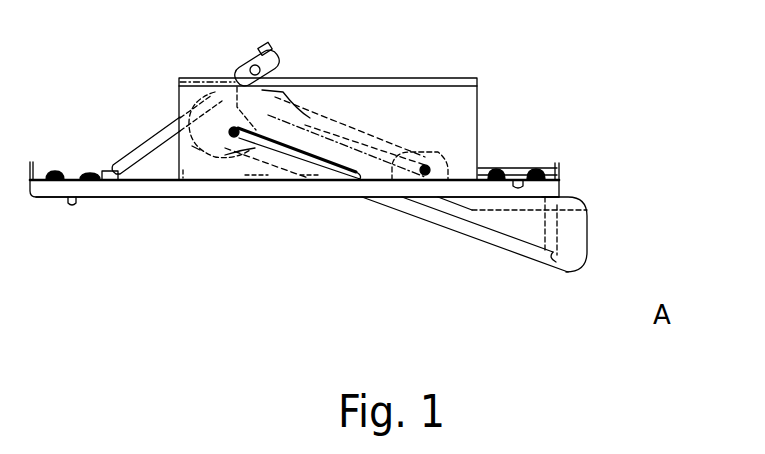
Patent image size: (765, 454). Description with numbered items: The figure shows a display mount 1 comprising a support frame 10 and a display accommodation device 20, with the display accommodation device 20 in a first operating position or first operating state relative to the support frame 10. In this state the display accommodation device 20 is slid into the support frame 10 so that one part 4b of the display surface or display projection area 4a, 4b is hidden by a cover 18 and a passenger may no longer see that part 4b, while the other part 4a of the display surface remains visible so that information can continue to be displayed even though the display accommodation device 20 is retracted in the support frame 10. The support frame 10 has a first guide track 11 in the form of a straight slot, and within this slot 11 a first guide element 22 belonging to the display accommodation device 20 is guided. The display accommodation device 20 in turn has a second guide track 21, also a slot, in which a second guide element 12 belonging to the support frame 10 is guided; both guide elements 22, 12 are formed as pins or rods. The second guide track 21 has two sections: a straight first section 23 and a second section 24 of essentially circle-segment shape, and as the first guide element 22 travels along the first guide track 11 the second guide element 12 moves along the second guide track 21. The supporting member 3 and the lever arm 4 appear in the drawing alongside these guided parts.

The display mount 1 is at (648, 125).
The support strut 3 is at (150, 137).
The lever arm 4 is at (406, 228).
The display surface part 4a is at (400, 213).
The display surface part 4b is at (278, 167).
The support frame 10 is at (410, 108).
The first guide track 11 is at (192, 146).
The second guide element 12 is at (433, 165).
The cover 18 is at (218, 190).
The display accommodation device 20 is at (522, 225).
The second guide track 21 is at (391, 97).
The first guide element 22 is at (222, 103).
The first section 23 is at (395, 158).
The second section 24 is at (295, 100).